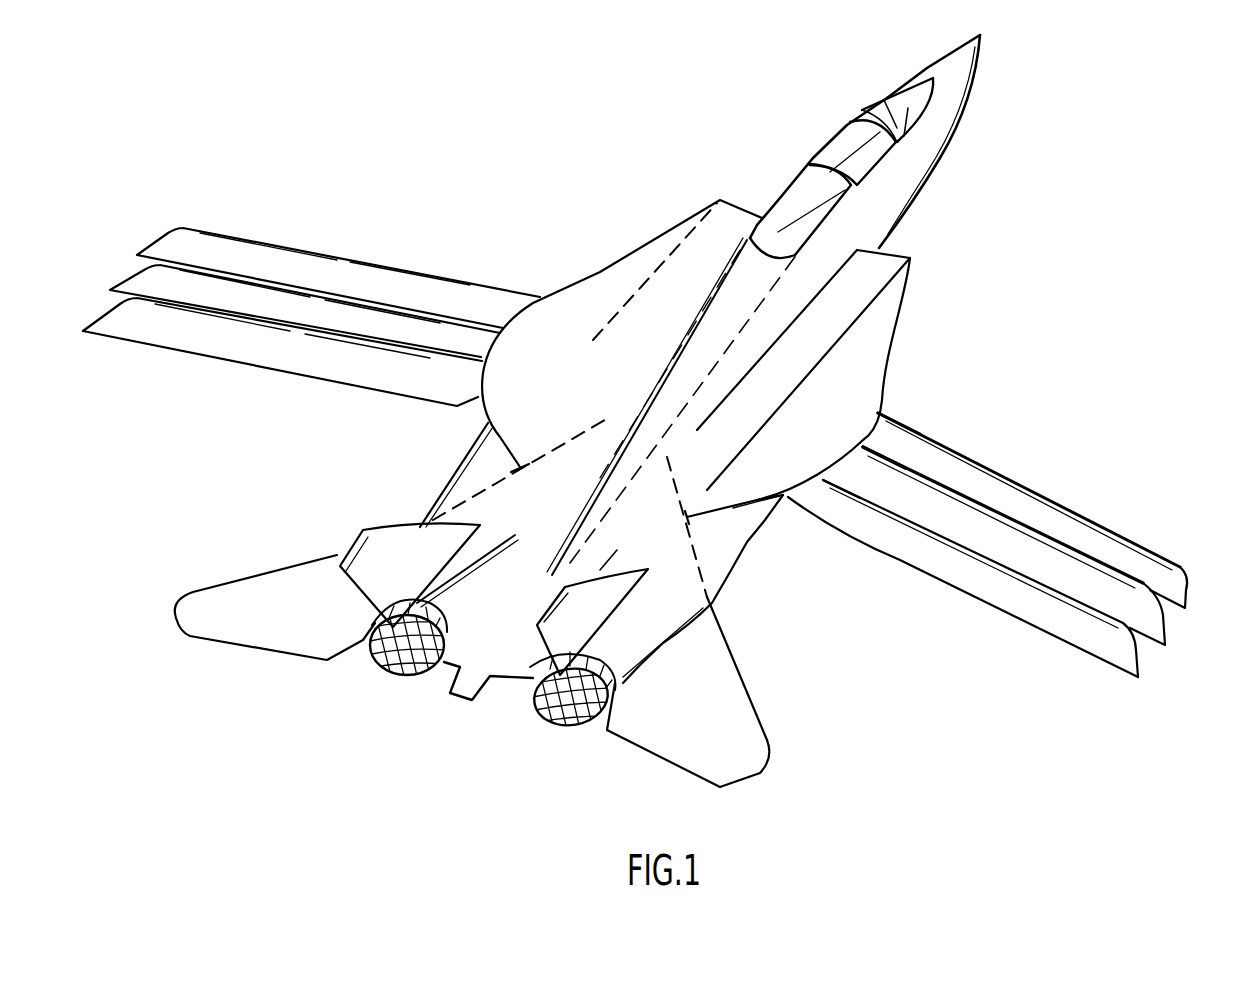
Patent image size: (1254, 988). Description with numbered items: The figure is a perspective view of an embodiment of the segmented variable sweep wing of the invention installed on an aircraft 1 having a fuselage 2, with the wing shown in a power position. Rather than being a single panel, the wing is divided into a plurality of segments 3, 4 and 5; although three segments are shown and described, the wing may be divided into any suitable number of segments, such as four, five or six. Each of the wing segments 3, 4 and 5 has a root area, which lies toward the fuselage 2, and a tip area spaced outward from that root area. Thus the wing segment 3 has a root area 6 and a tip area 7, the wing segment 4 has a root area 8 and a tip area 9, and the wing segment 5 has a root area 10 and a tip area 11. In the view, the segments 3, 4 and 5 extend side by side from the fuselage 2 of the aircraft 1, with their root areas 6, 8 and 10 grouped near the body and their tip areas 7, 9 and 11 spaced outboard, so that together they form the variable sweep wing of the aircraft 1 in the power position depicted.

The aircraft 1 is at (623, 387).
The fuselage 2 is at (893, 327).
The wing segment 3 is at (1000, 487).
The wing segment 4 is at (1028, 540).
The wing segment 5 is at (982, 585).
The root area 6 is at (896, 424).
The tip area 7 is at (1180, 567).
The root area 8 is at (857, 465).
The tip area 9 is at (1153, 620).
The root area 10 is at (817, 497).
The tip area 11 is at (1127, 665).